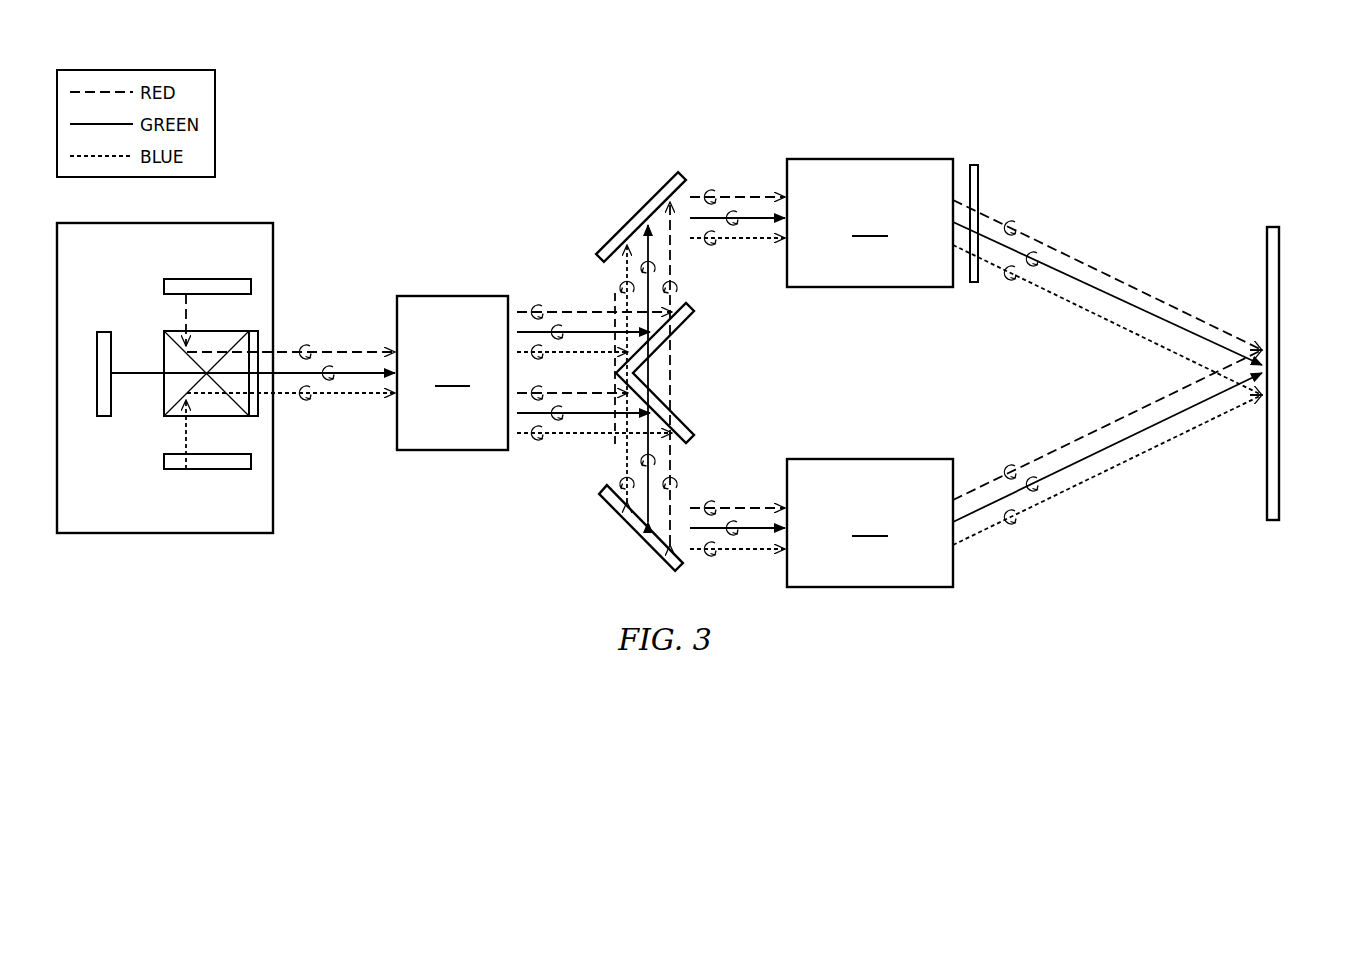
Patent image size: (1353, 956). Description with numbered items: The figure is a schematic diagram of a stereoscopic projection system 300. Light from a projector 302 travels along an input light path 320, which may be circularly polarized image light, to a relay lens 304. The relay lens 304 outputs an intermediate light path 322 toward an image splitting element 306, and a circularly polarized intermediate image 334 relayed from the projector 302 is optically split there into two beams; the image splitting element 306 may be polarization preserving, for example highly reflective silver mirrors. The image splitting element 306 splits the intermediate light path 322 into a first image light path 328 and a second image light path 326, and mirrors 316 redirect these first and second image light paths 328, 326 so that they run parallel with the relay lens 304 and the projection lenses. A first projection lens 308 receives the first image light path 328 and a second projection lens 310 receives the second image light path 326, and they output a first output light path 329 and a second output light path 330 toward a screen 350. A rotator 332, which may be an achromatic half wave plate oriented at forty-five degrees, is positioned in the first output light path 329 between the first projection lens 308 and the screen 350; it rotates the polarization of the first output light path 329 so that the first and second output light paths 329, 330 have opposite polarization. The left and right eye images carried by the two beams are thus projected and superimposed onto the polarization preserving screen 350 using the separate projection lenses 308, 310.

The stereoscopic projection system 300 is at (284, 622).
The projector 302 is at (112, 535).
The relay lens 304 is at (452, 373).
The image splitting element 306 is at (688, 421).
The first projection lens 308 is at (870, 223).
The second projection lens 310 is at (870, 523).
The mirrors 316 is at (632, 215).
The input light path 320 is at (335, 347).
The intermediate light path 322 is at (560, 305).
The second image light path 326 is at (745, 500).
The first image light path 328 is at (745, 250).
The first output light path 329 is at (1080, 257).
The second output light path 330 is at (1078, 490).
The rotator 332 is at (980, 188).
The circularly polarized intermediate image 334 is at (612, 445).
The screen 350 is at (1280, 272).